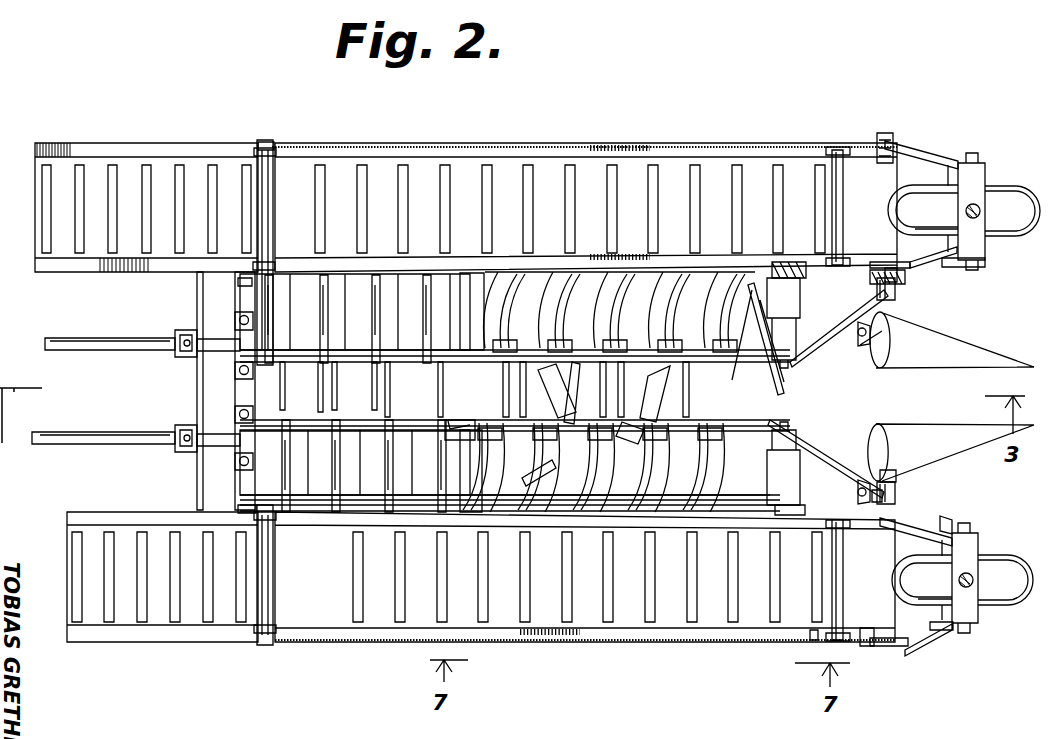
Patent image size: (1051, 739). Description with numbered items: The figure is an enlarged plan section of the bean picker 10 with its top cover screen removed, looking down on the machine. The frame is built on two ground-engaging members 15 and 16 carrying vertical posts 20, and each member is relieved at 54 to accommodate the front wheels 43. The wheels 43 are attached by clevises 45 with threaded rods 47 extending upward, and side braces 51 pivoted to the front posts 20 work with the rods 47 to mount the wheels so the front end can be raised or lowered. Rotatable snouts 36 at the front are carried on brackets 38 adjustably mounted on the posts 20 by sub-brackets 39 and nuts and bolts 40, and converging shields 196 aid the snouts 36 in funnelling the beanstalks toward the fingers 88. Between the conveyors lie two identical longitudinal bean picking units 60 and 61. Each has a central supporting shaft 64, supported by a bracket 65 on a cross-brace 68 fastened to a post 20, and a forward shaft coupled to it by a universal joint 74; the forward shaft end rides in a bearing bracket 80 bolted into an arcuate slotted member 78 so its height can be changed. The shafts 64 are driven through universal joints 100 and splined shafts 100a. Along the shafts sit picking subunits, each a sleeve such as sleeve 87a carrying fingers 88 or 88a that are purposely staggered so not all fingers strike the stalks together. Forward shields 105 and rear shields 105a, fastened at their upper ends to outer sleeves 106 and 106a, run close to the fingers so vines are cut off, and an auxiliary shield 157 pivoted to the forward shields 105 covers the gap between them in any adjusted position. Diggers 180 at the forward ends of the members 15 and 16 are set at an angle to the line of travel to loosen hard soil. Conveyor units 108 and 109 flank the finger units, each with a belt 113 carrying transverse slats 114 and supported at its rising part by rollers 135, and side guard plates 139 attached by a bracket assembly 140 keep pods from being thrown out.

The bean picker 10 is at (136, 276).
The ground-engaging member 15 is at (920, 154).
The ground-engaging member 16 is at (906, 648).
The vertical posts 20 is at (250, 142).
The snouts 36 is at (968, 336).
The brackets 38 is at (858, 350).
The sub-brackets 39 is at (898, 292).
The nuts and bolts 40 is at (896, 478).
The wheels 43 is at (1000, 190).
The clevises 45 is at (988, 248).
The threaded rods 47 is at (966, 208).
The side braces 51 is at (950, 272).
The relieved portion 54 is at (916, 216).
The bean picking unit 60 is at (360, 374).
The bean picking unit 61 is at (452, 414).
The central supporting shaft 64 is at (218, 348).
The bracket 65 is at (234, 338).
The cross-brace 68 is at (240, 294).
The universal joints 74 is at (480, 368).
The arcuate slotted members 78 is at (778, 264).
The brackets 80 is at (793, 299).
The sleeve 87a is at (384, 436).
The fingers 88 is at (778, 396).
The fingers 88a is at (280, 384).
The universal joints 100 is at (180, 358).
The splined shafts 100a is at (76, 414).
The shields 105 is at (584, 276).
The shields 105a is at (380, 510).
The outer sleeves 106 is at (634, 376).
The outer sleeves 106a is at (390, 422).
The conveyor unit 108 is at (463, 181).
The conveyor unit 109 is at (459, 608).
The belt 113 is at (671, 172).
The slats 114 is at (736, 170).
The rollers 135 is at (272, 149).
The side guard plates 139 is at (423, 144).
The bracket assembly 140 is at (840, 148).
The auxiliary shield 157 is at (470, 272).
The diggers 180 is at (724, 490).
The converging shields 196 is at (832, 336).